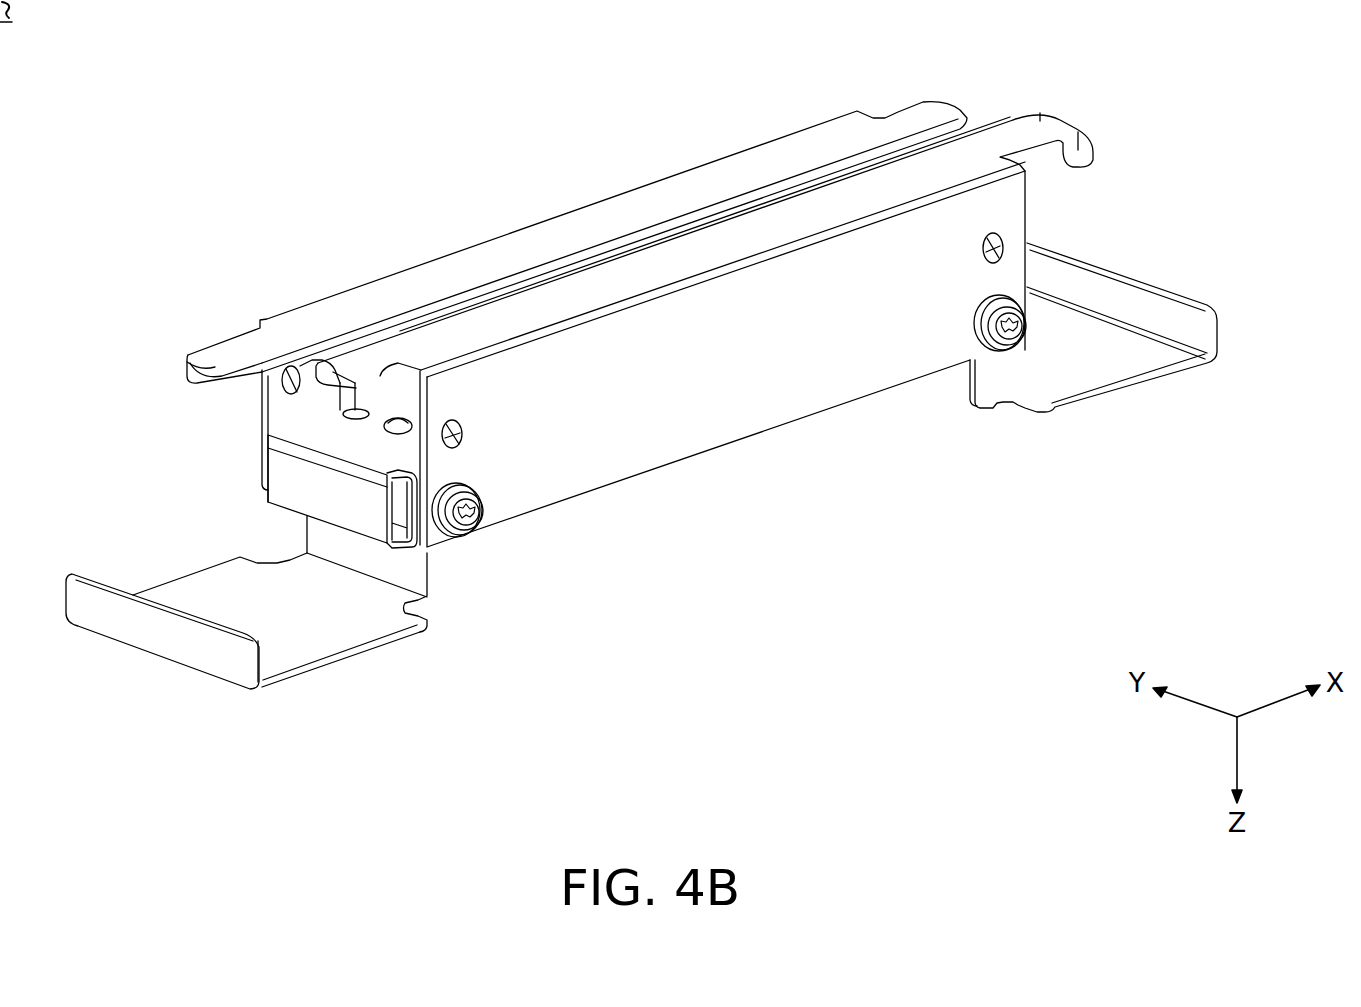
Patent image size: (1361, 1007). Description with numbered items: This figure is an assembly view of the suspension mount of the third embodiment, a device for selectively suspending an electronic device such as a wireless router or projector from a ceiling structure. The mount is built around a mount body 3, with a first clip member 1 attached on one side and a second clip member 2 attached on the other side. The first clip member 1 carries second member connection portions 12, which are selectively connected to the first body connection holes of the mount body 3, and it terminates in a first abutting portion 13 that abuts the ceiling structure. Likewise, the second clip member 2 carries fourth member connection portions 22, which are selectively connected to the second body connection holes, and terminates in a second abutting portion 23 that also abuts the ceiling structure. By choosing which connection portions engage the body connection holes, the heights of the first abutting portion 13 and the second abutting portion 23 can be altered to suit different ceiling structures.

The first clip member 1 is at (706, 344).
The second clip member 2 is at (577, 218).
The mount body 3 is at (1178, 272).
The second member connection portions 12 is at (467, 440).
The first abutting portion 13 is at (998, 138).
The fourth member connection portions 22 is at (348, 401).
The second abutting portion 23 is at (838, 140).